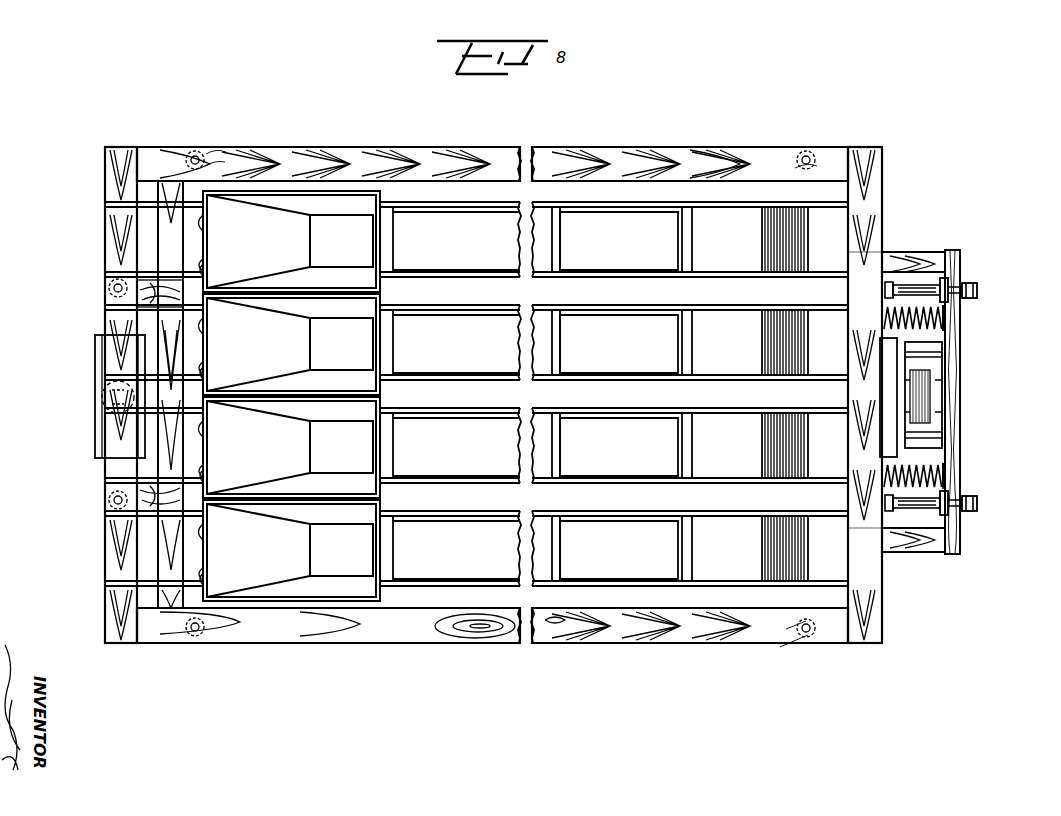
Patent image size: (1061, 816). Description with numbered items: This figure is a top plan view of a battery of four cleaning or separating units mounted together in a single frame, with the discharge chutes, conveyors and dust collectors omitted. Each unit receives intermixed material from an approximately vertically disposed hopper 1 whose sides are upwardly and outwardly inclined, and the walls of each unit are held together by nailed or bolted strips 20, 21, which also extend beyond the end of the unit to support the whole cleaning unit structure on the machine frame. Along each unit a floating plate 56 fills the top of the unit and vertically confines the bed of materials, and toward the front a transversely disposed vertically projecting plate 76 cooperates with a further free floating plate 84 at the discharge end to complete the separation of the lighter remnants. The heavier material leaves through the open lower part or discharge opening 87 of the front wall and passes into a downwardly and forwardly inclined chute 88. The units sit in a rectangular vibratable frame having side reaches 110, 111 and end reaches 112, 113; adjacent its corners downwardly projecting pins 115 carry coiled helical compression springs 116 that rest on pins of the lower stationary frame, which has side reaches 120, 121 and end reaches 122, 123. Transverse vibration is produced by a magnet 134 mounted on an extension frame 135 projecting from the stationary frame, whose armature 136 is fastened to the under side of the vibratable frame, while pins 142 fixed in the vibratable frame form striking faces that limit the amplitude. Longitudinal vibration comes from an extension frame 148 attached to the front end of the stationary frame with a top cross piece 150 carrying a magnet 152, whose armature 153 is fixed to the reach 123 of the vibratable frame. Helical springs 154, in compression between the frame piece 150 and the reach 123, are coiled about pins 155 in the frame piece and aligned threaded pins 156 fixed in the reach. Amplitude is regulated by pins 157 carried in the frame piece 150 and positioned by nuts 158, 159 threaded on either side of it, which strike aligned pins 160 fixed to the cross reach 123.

The hopper 1 is at (305, 196).
The strip 20 is at (115, 200).
The strip 21 is at (123, 273).
The plate 56 is at (476, 190).
The vertically projecting plate 76 is at (576, 190).
The plate 84 is at (626, 224).
The discharge opening 87 is at (738, 190).
The chute 88 is at (816, 190).
The side reach 110 is at (466, 634).
The side reach 111 is at (488, 160).
The end reach 112 is at (120, 548).
The end reach 113 is at (868, 190).
The pin 115 is at (198, 157).
The helical compression spring 116 is at (236, 150).
The side reach 120 is at (574, 642).
The side reach 121 is at (420, 148).
The end reach 122 is at (172, 242).
The end reach 123 is at (880, 212).
The magnet 134 is at (98, 362).
The extension frame 135 is at (158, 290).
The armature 136 is at (111, 413).
The pin 142 is at (112, 286).
The extension frame 148 is at (890, 260).
The top cross piece 150 is at (958, 412).
The magnet 152 is at (935, 394).
The armature 153 is at (888, 356).
The helical spring 154 is at (940, 312).
The pin 155 is at (944, 325).
The threaded pin 156 is at (884, 322).
The pin 157 is at (915, 276).
The nut 158 is at (950, 285).
The nut 159 is at (978, 291).
The pin 160 is at (900, 282).